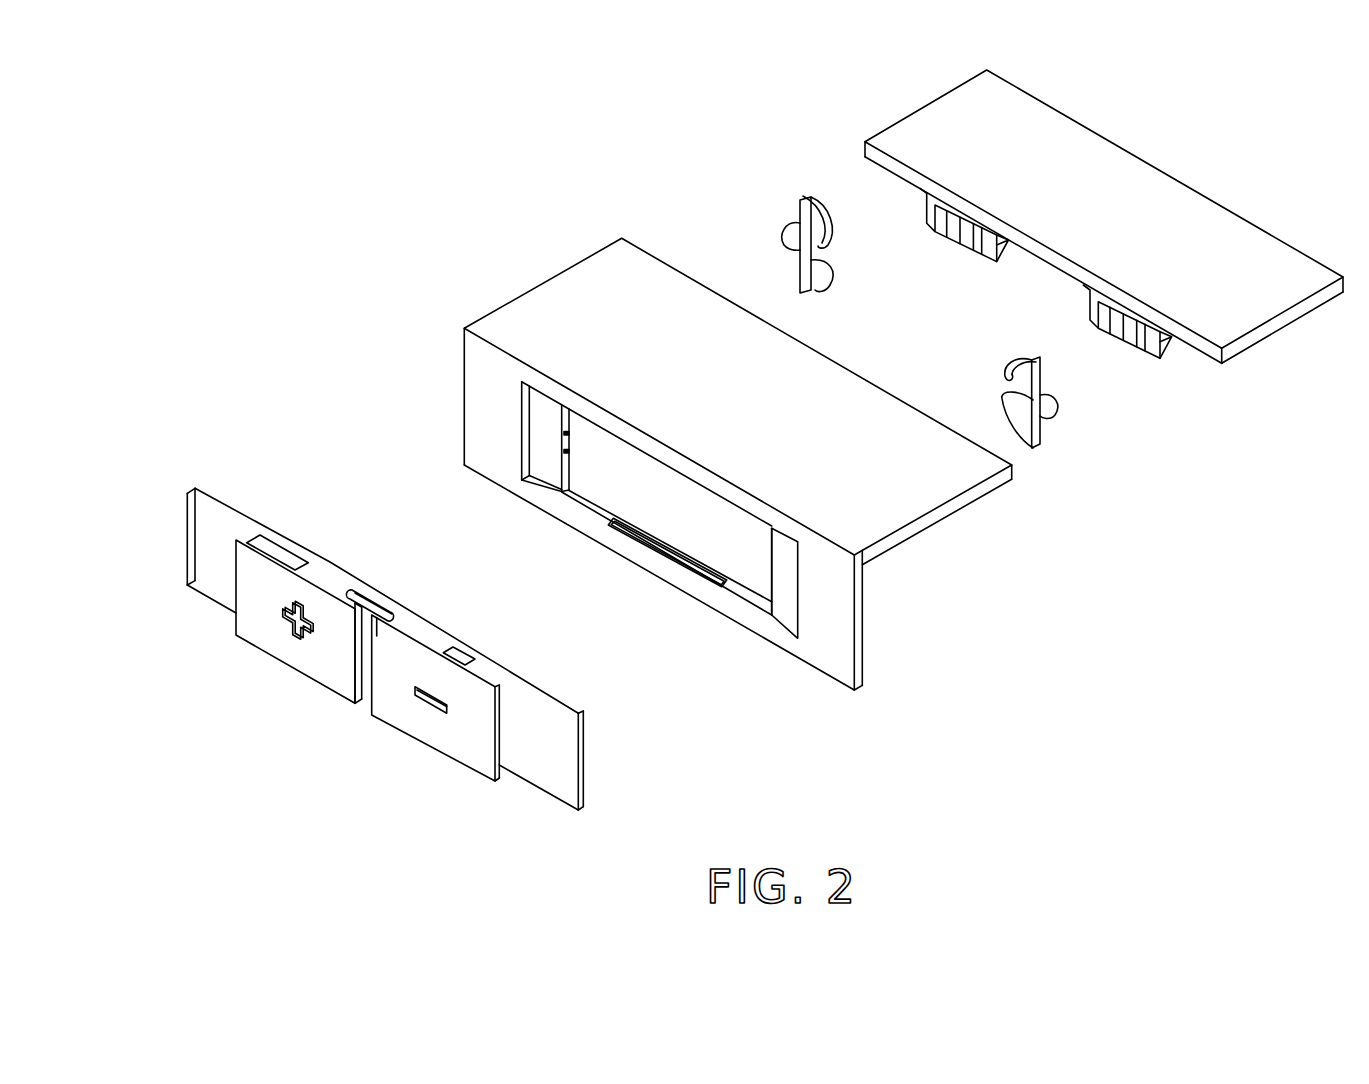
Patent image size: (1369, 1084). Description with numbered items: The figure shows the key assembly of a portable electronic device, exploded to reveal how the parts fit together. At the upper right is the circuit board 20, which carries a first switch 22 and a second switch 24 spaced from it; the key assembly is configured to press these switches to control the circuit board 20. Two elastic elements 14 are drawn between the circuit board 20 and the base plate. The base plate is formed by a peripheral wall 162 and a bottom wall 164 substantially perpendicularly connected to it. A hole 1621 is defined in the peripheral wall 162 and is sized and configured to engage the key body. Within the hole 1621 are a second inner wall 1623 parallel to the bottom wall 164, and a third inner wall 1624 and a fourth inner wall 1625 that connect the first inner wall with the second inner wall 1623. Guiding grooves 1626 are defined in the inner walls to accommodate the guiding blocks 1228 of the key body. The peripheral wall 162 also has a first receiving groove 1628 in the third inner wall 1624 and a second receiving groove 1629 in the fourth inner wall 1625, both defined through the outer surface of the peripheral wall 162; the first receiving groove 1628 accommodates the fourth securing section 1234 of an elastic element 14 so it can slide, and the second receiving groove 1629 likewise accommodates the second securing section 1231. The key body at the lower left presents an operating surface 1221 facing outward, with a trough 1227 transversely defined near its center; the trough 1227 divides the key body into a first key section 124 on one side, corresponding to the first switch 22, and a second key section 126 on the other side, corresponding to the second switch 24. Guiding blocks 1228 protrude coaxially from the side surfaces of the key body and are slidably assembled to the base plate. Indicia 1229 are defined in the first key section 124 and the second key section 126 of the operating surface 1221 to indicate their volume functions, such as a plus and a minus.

The elastic element 14 is at (1040, 440).
The circuit board 20 is at (1182, 238).
The first switch 22 is at (1172, 342).
The second switch 24 is at (930, 216).
The first key section 124 is at (417, 718).
The second key section 126 is at (347, 688).
The peripheral wall 162 is at (862, 635).
The bottom wall 164 is at (950, 525).
The operating surface 1221 is at (280, 642).
The trough 1227 is at (365, 663).
The guiding block 1228 is at (376, 597).
The indicia 1229 is at (440, 712).
The second securing section 1231 is at (503, 738).
The fourth securing section 1234 is at (248, 543).
The hole 1621 is at (605, 480).
The second inner wall 1623 is at (765, 577).
The third inner wall 1624 is at (566, 460).
The fourth inner wall 1625 is at (733, 594).
The guiding groove 1626 is at (643, 540).
The first receiving groove 1628 is at (547, 425).
The second receiving groove 1629 is at (787, 605).